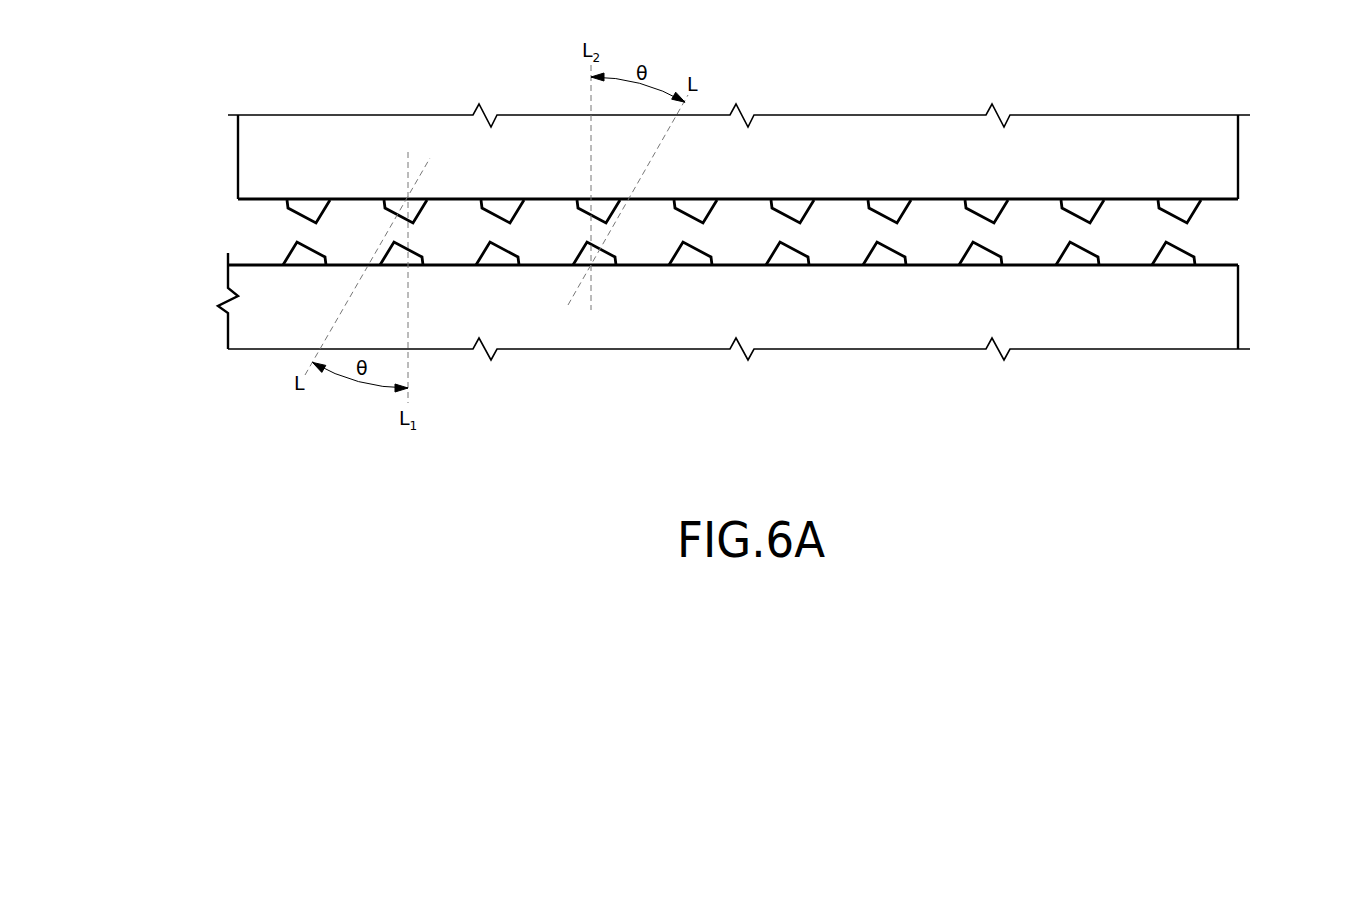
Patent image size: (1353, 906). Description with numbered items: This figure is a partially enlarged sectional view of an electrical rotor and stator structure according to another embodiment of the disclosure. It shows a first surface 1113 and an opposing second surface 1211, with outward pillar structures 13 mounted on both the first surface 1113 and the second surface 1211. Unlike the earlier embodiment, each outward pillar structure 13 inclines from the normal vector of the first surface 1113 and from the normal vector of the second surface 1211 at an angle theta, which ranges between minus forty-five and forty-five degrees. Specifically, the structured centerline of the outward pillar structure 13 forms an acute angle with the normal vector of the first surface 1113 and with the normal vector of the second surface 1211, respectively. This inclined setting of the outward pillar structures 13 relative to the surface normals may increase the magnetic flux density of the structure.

The first surface 1113 is at (1137, 200).
The second surface 1211 is at (260, 265).
The outward pillar structure 13 is at (1180, 208).